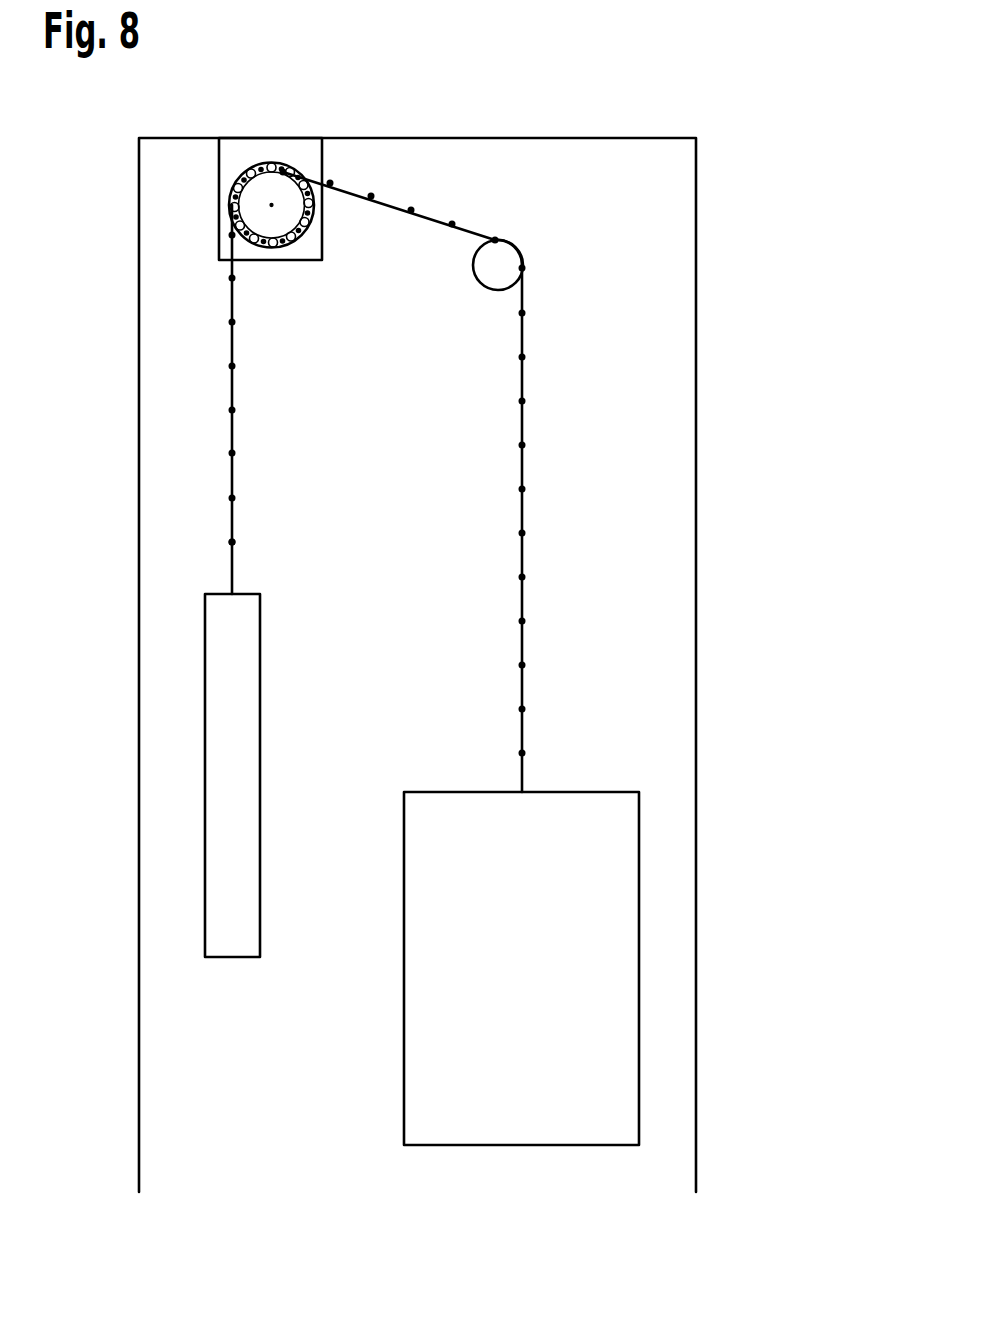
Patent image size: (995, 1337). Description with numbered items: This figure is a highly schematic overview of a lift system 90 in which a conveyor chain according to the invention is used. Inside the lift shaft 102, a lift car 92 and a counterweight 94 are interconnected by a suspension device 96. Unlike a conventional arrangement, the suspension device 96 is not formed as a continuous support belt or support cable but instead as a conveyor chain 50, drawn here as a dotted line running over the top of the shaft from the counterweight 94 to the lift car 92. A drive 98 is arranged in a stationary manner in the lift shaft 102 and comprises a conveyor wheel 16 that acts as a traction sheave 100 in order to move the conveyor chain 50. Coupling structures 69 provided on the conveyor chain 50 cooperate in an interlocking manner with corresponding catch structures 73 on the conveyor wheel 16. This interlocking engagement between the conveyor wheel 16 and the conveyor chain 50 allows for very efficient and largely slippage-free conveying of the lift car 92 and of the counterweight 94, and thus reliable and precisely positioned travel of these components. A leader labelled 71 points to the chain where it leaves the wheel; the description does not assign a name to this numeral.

The conveyor wheel 16 is at (324, 228).
The conveyor chain 50 is at (242, 524).
The coupling structures 69 is at (208, 315).
The traction element 71 is at (284, 160).
The catch structures 73 is at (233, 252).
The lift system 90 is at (765, 427).
The lift car 92 is at (521, 1146).
The counterweight 94 is at (234, 958).
The suspension device 96 is at (233, 476).
The drive 98 is at (308, 278).
The traction sheave 100 is at (272, 216).
The lift shaft 102 is at (402, 682).